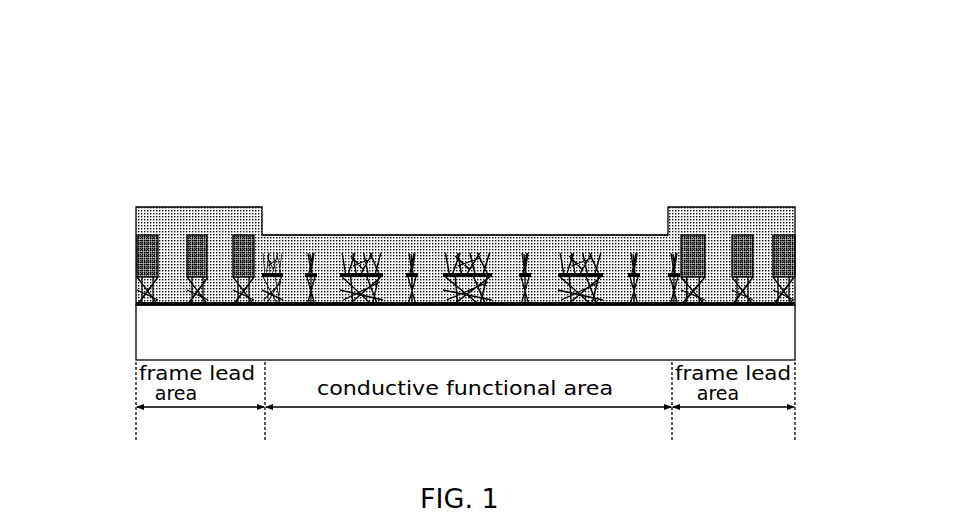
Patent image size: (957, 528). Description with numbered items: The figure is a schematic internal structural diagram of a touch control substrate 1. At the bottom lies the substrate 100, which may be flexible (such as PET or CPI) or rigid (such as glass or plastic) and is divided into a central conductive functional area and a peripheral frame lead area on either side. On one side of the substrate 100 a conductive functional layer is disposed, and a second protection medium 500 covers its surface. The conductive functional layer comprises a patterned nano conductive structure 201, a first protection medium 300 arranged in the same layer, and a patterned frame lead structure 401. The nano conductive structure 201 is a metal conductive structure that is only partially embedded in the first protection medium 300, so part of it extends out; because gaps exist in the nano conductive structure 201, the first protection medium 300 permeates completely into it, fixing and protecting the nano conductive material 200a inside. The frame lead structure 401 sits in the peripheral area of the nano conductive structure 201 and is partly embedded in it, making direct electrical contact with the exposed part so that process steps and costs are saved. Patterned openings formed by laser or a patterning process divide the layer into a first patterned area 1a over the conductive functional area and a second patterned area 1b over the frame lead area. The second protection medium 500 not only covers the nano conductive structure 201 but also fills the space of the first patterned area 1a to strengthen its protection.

The touch control substrate 1 is at (464, 91).
The second protection medium 500 is at (137, 220).
The frame lead structure 401 is at (135, 243).
The first protection medium 300 is at (136, 287).
The second patterned area 1b is at (168, 260).
The nano conductive material 200a is at (350, 265).
The first patterned area 1a is at (504, 268).
The nano conductive structure 201 is at (800, 253).
The substrate 100 is at (790, 332).